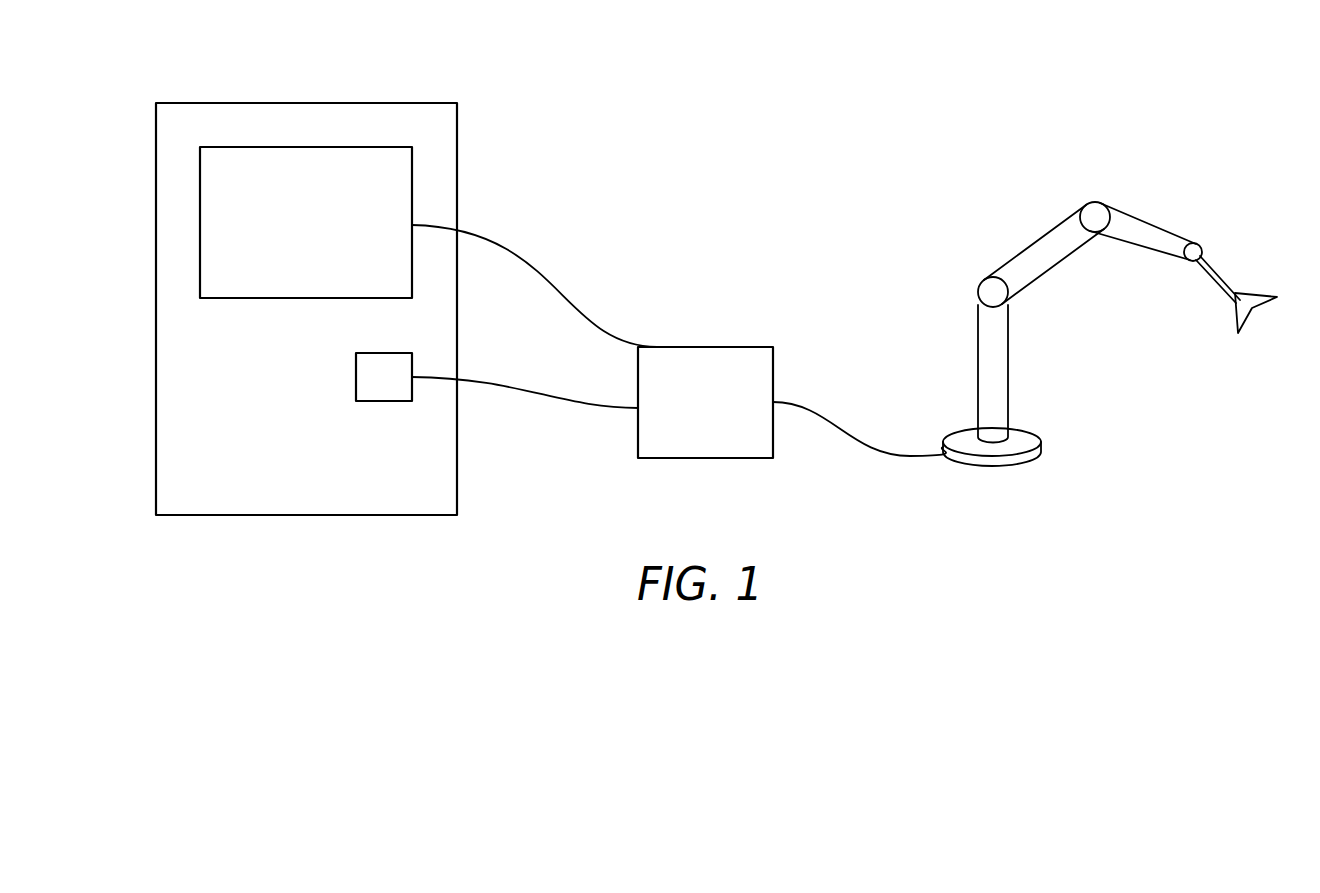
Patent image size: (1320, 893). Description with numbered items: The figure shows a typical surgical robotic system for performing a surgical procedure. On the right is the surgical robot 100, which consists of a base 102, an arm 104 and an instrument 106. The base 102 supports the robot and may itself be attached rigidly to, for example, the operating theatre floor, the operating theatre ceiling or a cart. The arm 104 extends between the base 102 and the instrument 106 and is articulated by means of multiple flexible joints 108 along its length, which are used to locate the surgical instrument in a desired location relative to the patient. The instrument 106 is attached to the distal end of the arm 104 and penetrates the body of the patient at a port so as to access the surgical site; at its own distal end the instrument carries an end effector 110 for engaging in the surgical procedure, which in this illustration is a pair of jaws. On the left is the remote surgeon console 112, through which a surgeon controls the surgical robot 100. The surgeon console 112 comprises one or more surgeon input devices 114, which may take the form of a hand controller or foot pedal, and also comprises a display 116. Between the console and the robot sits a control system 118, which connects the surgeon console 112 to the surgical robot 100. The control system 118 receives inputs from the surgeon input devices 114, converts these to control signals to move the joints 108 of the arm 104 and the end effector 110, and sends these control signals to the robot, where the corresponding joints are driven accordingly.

The surgical robot 100 is at (996, 186).
The base 102 is at (1043, 447).
The arm 104 is at (1068, 278).
The instrument 106 is at (1238, 267).
The flexible joints 108 is at (987, 284).
The end effector 110 is at (1247, 317).
The surgeon console 112 is at (420, 66).
The surgeon input devices 114 is at (356, 359).
The display 116 is at (200, 157).
The control system 118 is at (745, 460).